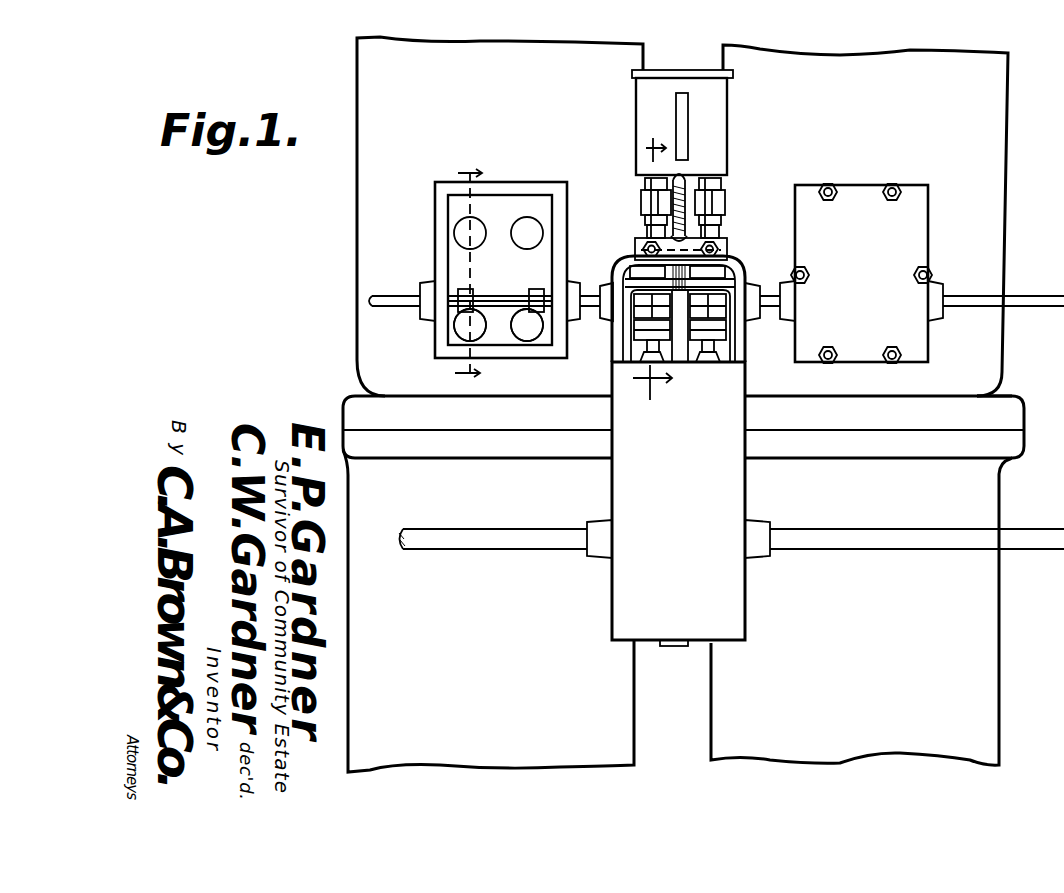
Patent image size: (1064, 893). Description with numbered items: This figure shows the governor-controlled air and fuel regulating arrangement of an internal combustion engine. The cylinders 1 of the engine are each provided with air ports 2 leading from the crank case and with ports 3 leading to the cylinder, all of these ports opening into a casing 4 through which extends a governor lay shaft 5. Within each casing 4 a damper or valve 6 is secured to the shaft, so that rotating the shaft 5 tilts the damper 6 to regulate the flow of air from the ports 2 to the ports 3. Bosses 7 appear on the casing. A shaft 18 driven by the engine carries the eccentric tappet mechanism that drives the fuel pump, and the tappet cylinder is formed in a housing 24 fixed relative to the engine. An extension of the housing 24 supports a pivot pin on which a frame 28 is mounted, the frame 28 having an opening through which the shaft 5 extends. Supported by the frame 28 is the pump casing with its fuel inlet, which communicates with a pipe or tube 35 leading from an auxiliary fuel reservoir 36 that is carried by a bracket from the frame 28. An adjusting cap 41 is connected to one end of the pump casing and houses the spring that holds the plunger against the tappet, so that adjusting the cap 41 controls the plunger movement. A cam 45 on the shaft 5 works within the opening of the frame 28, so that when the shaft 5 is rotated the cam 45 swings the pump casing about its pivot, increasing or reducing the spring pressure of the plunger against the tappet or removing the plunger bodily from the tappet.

The cylinders 1 is at (995, 95).
The air ports 2 is at (652, 271).
The ports 3 is at (527, 146).
The casing 4 is at (945, 234).
The governor lay shaft 5 is at (384, 300).
The damper or valve 6 is at (503, 287).
The bearing bosses 7 is at (483, 333).
The shaft 18 is at (858, 548).
The housing 24 is at (737, 494).
The frame 28 is at (723, 350).
The pipe or tube 35 is at (648, 185).
The auxiliary fuel reservoir 36 is at (742, 133).
The adjusting cap 41 is at (700, 345).
The cam 45 is at (700, 207).